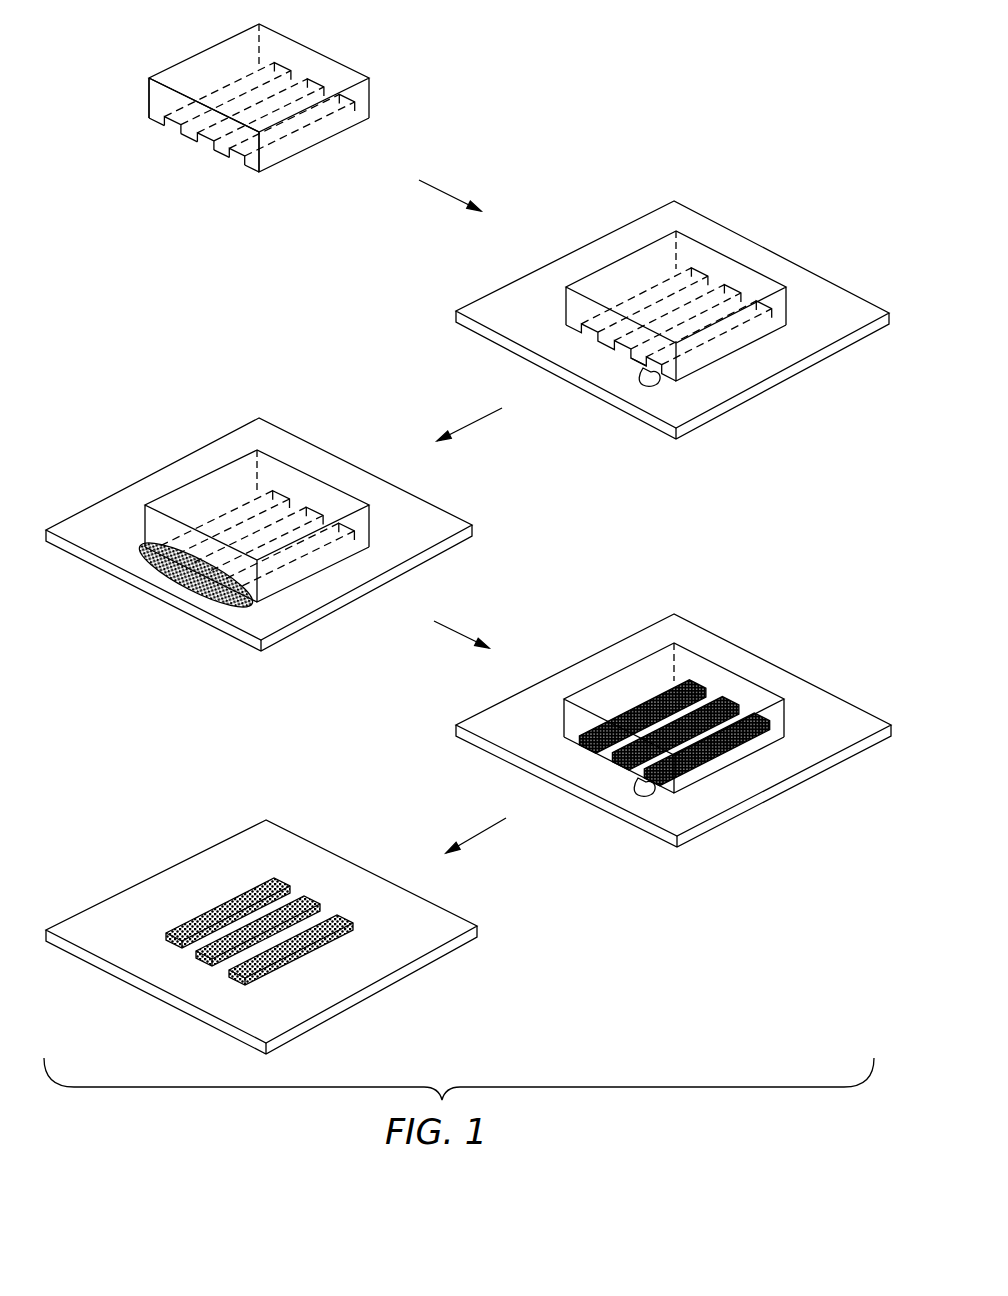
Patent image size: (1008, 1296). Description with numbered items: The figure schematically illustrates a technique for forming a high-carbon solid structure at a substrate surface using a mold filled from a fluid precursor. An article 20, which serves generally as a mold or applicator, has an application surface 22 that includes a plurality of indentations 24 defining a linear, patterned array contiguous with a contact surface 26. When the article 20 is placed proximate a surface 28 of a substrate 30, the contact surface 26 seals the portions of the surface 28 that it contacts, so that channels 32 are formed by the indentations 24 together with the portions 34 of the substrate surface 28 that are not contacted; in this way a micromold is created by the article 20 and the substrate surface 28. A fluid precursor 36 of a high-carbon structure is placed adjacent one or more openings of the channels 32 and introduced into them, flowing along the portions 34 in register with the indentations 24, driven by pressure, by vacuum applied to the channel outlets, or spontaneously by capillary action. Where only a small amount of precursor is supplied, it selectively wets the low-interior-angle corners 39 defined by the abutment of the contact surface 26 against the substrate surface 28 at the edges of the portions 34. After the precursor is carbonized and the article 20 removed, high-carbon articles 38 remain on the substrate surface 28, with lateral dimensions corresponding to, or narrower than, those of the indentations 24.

The article 20 is at (348, 60).
The application surface 22 is at (208, 162).
The indentations 24 is at (173, 128).
The contact surface 26 is at (157, 124).
The surface 28 is at (808, 280).
The substrate 30 is at (852, 342).
The channels 32 is at (623, 357).
The portions of substrate surface 34 is at (646, 386).
The fluid precursor 36 is at (195, 590).
The high-carbon article 38 is at (340, 912).
The corners 39 is at (585, 340).